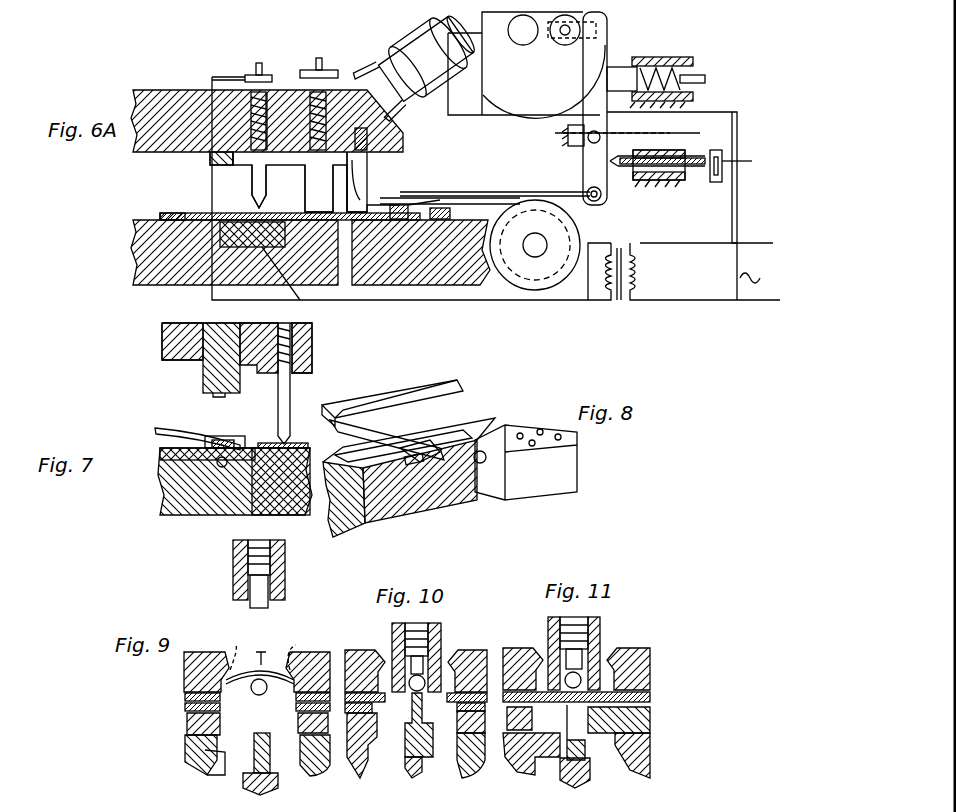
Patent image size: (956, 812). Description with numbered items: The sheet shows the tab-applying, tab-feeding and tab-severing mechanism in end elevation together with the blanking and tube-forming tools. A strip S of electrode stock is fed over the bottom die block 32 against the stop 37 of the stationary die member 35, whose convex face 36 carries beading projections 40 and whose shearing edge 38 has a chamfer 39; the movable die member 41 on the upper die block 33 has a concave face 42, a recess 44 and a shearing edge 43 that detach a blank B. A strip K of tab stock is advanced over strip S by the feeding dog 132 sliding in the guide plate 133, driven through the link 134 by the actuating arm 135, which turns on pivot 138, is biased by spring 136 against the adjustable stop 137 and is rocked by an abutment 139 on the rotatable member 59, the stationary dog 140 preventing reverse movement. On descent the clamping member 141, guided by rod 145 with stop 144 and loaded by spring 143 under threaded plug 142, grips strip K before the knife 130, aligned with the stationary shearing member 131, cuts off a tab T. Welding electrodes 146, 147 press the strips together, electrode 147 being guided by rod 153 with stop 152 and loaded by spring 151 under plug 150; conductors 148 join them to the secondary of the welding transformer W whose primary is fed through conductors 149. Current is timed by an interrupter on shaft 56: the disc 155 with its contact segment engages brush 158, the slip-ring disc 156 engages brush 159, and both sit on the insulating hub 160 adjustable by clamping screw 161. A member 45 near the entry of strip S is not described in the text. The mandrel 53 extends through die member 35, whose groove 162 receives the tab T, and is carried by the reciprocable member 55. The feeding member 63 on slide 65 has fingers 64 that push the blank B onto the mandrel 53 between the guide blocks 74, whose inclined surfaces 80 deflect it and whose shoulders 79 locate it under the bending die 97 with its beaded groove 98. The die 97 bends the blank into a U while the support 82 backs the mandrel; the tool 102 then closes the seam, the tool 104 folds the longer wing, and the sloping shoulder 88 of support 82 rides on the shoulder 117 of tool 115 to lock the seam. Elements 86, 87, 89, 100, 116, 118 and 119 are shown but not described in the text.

In FIG. 6A, the upper die block 33 is at (178, 95).
In FIG. 7, the upper die block 33 is at (162, 352).
In FIG. 6A, the stop 152 is at (259, 65).
In FIG. 6A, the guide rod 153 is at (245, 80).
In FIG. 6A, the threaded plug 150 is at (270, 95).
In FIG. 6A, the spring 151 is at (268, 118).
In FIG. 6A, the guide rod 145 is at (320, 68).
In FIG. 6A, the stop 144 is at (330, 76).
In FIG. 6A, the threaded plug 142 is at (328, 100).
In FIG. 6A, the spring 143 is at (328, 122).
In FIG. 6A, the conductors 148 is at (212, 168).
In FIG. 6A, the welding electrode 147 is at (252, 174).
In FIG. 7, the welding electrode 147 is at (290, 394).
In FIG. 6A, the clamping member 141 is at (305, 174).
In FIG. 6A, the movable shearing member 130 is at (357, 124).
In FIG. 6A, the strip of electrode material S is at (242, 214).
In FIG. 7, the strip of electrode material S is at (292, 443).
In FIG. 6A, the tab strip K is at (270, 213).
In FIG. 6A, the guide pad 45 is at (165, 213).
In FIG. 6A, the bottom die block 32 is at (133, 268).
In FIG. 6A, the welding electrode 146 is at (248, 250).
In FIG. 6A, the stationary shearing member 131 is at (355, 243).
In FIG. 6A, the feeding pawl or dog 132 is at (420, 222).
In FIG. 6A, the guide plate 133 is at (442, 222).
In FIG. 6A, the stationary dog 140 is at (508, 245).
In FIG. 6A, the link 134 is at (445, 195).
In FIG. 6A, the shaft 56 is at (408, 108).
In FIG. 6A, the disc 156 is at (442, 105).
In FIG. 6A, the hub 160 is at (435, 82).
In FIG. 6A, the clamping screw 161 is at (441, 57).
In FIG. 6A, the disc 155 is at (456, 86).
In FIG. 6A, the brush 158 is at (415, 18).
In FIG. 6A, the brush 159 is at (375, 36).
In FIG. 6A, the rotatable member or cam 59 is at (523, 100).
In FIG. 6A, the abutment 139 is at (560, 45).
In FIG. 6A, the actuating arm 135 is at (607, 112).
In FIG. 6A, the spring 136 is at (650, 57).
In FIG. 6A, the pivot 138 is at (588, 148).
In FIG. 6A, the adjustable stop 137 is at (622, 170).
In FIG. 6A, the welding transformer W is at (622, 245).
In FIG. 6A, the conductors 149 is at (665, 298).
In FIG. 7, the recess 44 is at (236, 358).
In FIG. 7, the movable die member 41 is at (203, 382).
In FIG. 7, the bottom face 42 is at (214, 397).
In FIG. 7, the edge 43 is at (238, 393).
In FIG. 7, the blank-feeding member 63 is at (170, 428).
In FIG. 7, the depending fingers 64 is at (212, 436).
In FIG. 8, the depending fingers 64 is at (425, 462).
In FIG. 7, the stationary die member 35 is at (162, 490).
In FIG. 8, the stationary die member 35 is at (420, 490).
In FIG. 7, the vertical wall or stop 37 is at (160, 454).
In FIG. 8, the vertical wall or stop 37 is at (365, 445).
In FIG. 7, the convex die portion 36 is at (222, 458).
In FIG. 8, the convex die portion 36 is at (455, 505).
In FIG. 7, the recess or groove 162 is at (220, 460).
In FIG. 8, the recess or groove 162 is at (400, 470).
In FIG. 7, the projections 40 is at (225, 462).
In FIG. 7, the chamfer 39 is at (254, 458).
In FIG. 7, the shearing edge 38 is at (254, 476).
In FIG. 7, the mandrel 53 is at (222, 467).
In FIG. 8, the mandrel 53 is at (340, 525).
In FIG. 9, the mandrel 53 is at (268, 688).
In FIG. 10, the mandrel 53 is at (446, 650).
In FIG. 11, the mandrel 53 is at (597, 660).
In FIG. 8, the slide 65 is at (402, 395).
In FIG. 8, the tab T is at (430, 450).
In FIG. 9, the tab T is at (260, 651).
In FIG. 10, the tab T is at (390, 692).
In FIG. 8, the electrode blank B is at (412, 470).
In FIG. 9, the electrode blank B is at (268, 662).
In FIG. 8, the reciprocable member 55 is at (545, 478).
In FIG. 9, the bending die 97 is at (285, 560).
In FIG. 10, the bending die 97 is at (444, 625).
In FIG. 11, the bending die 97 is at (600, 636).
In FIG. 9, the groove 98 is at (272, 605).
In FIG. 9, the guide members 74 is at (200, 650).
In FIG. 10, the guide members 74 is at (365, 650).
In FIG. 11, the guide members 74 is at (530, 650).
In FIG. 9, the inclined surfaces 80 is at (273, 645).
In FIG. 9, the shoulders 79 is at (228, 690).
In FIG. 10, the shoulders 79 is at (416, 699).
In FIG. 11, the shoulders 79 is at (522, 650).
In FIG. 9, the block 116 is at (187, 745).
In FIG. 10, the block 116 is at (377, 742).
In FIG. 9, the tool 115 is at (192, 762).
In FIG. 11, the tool 115 is at (531, 754).
In FIG. 9, the sloping shoulder 117 is at (212, 775).
In FIG. 10, the sloping shoulder 117 is at (362, 772).
In FIG. 9, the stem 86 is at (272, 748).
In FIG. 10, the stem 86 is at (433, 746).
In FIG. 11, the stem 86 is at (585, 748).
In FIG. 9, the shoulder 87 is at (262, 733).
In FIG. 9, the sloping shoulder 88 is at (253, 765).
In FIG. 9, the reciprocable support 82 is at (248, 790).
In FIG. 10, the reciprocable support 82 is at (413, 770).
In FIG. 11, the reciprocable support 82 is at (564, 785).
In FIG. 9, the flange 89 is at (274, 778).
In FIG. 9, the block 119 is at (300, 730).
In FIG. 10, the block 119 is at (458, 706).
In FIG. 9, the block 118 is at (315, 755).
In FIG. 10, the block 118 is at (486, 762).
In FIG. 11, the block 118 is at (619, 742).
In FIG. 10, the gap 100 is at (380, 704).
In FIG. 11, the gap 100 is at (565, 700).
In FIG. 10, the tool 104 is at (380, 712).
In FIG. 11, the tool 104 is at (533, 714).
In FIG. 11, the tool 102 is at (586, 700).